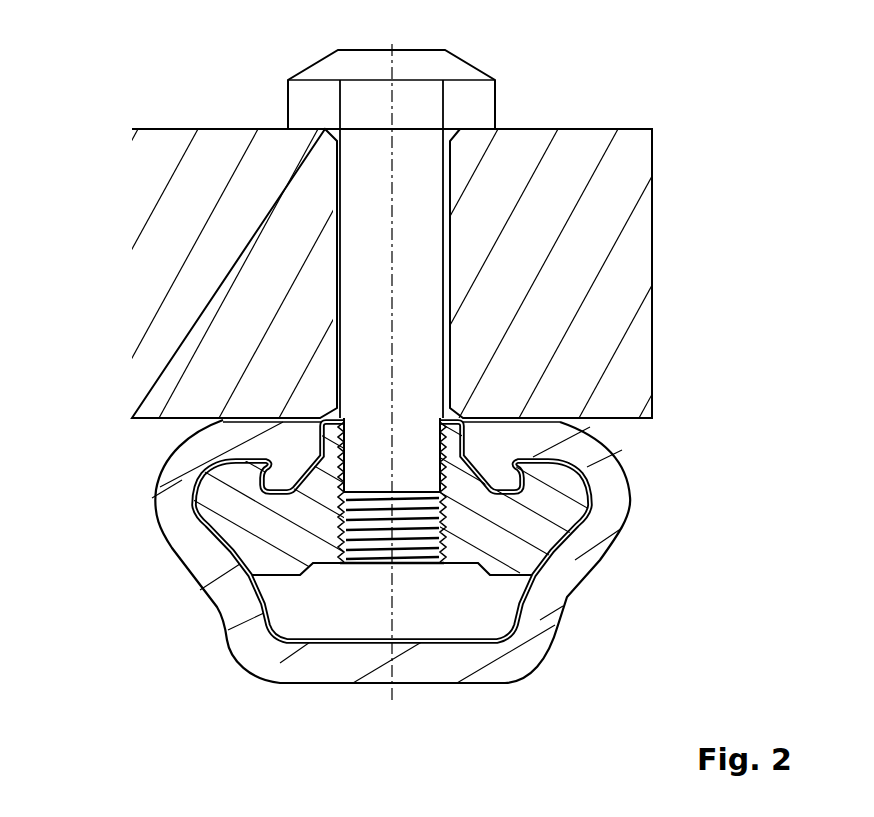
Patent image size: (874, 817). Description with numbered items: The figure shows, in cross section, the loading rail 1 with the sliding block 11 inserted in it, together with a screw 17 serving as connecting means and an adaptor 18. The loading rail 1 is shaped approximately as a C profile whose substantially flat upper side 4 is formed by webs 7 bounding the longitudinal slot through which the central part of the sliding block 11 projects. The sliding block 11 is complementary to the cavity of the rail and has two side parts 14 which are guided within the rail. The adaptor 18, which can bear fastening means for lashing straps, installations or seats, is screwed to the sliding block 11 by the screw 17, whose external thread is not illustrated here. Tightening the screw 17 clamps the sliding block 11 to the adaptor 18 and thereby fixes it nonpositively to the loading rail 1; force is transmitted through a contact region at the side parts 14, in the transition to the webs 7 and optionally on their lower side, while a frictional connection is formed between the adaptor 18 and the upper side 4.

The adaptor 18 is at (549, 80).
The loading rail 1 is at (118, 460).
The upper side 4 is at (507, 418).
The webs 7 is at (540, 445).
The side parts 14 is at (570, 500).
The sliding block 11 is at (293, 600).
The screw 17 is at (384, 553).